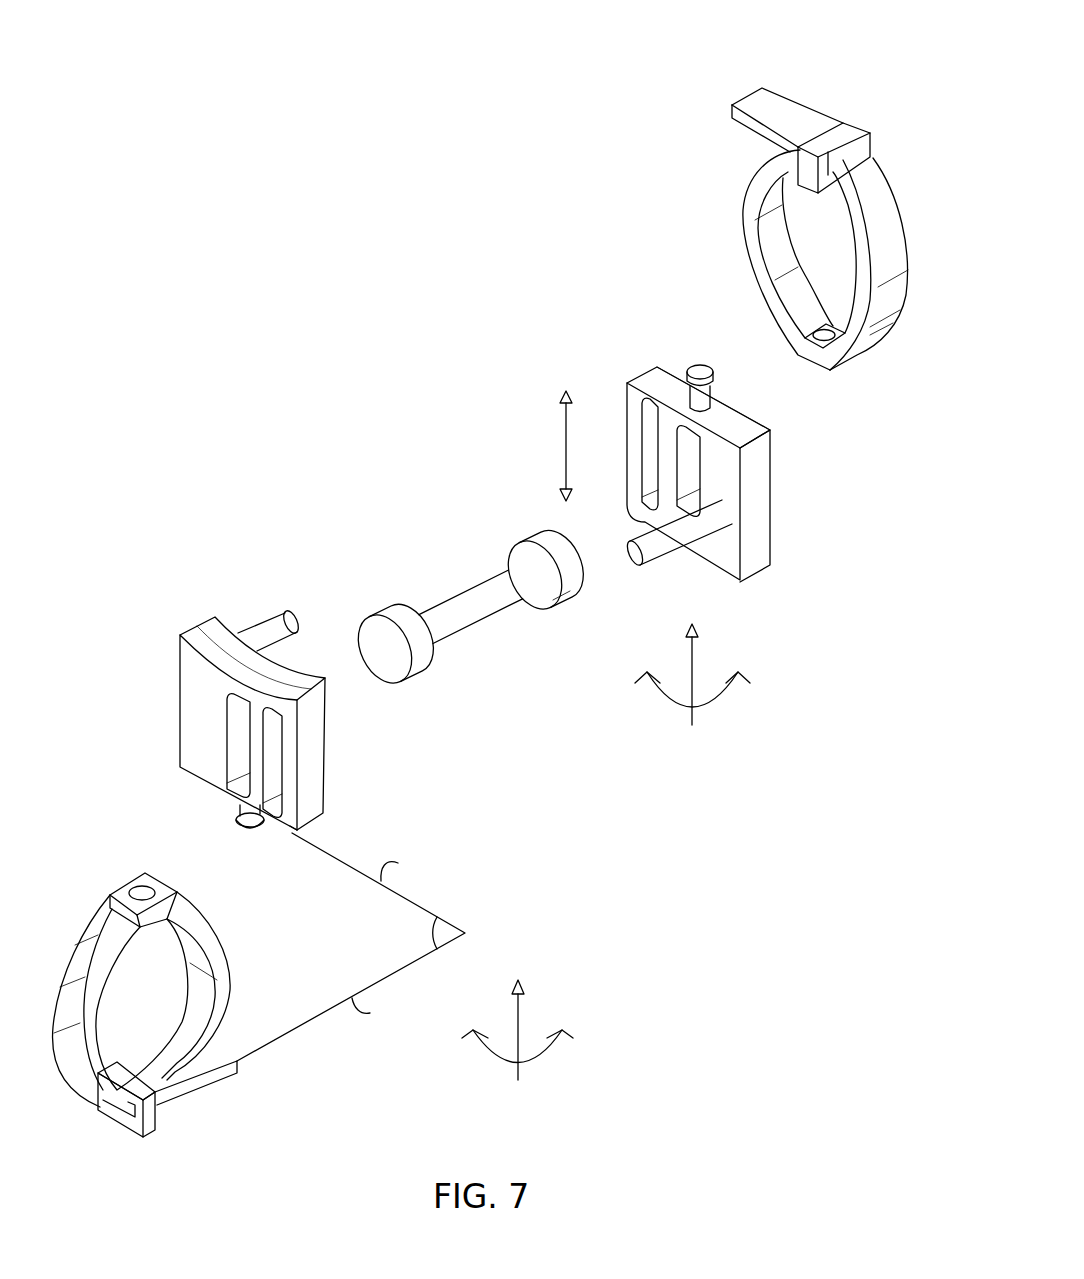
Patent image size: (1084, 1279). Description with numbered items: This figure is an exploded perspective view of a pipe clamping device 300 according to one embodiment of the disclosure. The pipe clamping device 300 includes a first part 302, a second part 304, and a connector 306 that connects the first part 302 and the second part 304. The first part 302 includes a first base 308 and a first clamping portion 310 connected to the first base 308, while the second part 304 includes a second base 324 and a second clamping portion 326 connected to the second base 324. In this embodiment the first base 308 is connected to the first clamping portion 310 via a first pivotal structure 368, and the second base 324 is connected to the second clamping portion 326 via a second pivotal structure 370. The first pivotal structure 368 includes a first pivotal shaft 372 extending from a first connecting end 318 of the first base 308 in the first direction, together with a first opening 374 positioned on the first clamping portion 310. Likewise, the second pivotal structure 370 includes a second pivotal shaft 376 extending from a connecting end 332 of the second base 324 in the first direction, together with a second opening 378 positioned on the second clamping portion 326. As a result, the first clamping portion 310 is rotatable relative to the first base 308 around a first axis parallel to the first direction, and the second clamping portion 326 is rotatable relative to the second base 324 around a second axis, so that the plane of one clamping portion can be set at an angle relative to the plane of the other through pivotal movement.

The pipe clamping device 300 is at (895, 32).
The first part 302 is at (876, 411).
The second part 304 is at (282, 940).
The connector 306 is at (447, 577).
The first base 308 is at (763, 503).
The first clamping portion 310 is at (907, 251).
The first connecting end 318 is at (743, 430).
The second base 324 is at (180, 706).
The second clamping portion 326 is at (73, 973).
The connecting end 332 is at (290, 833).
The first pivotal structure 368 is at (800, 297).
The second pivotal structure 370 is at (200, 786).
The first pivotal shaft 372 is at (708, 393).
The first opening 374 is at (824, 329).
The second pivotal shaft 376 is at (244, 817).
The second opening 378 is at (140, 889).